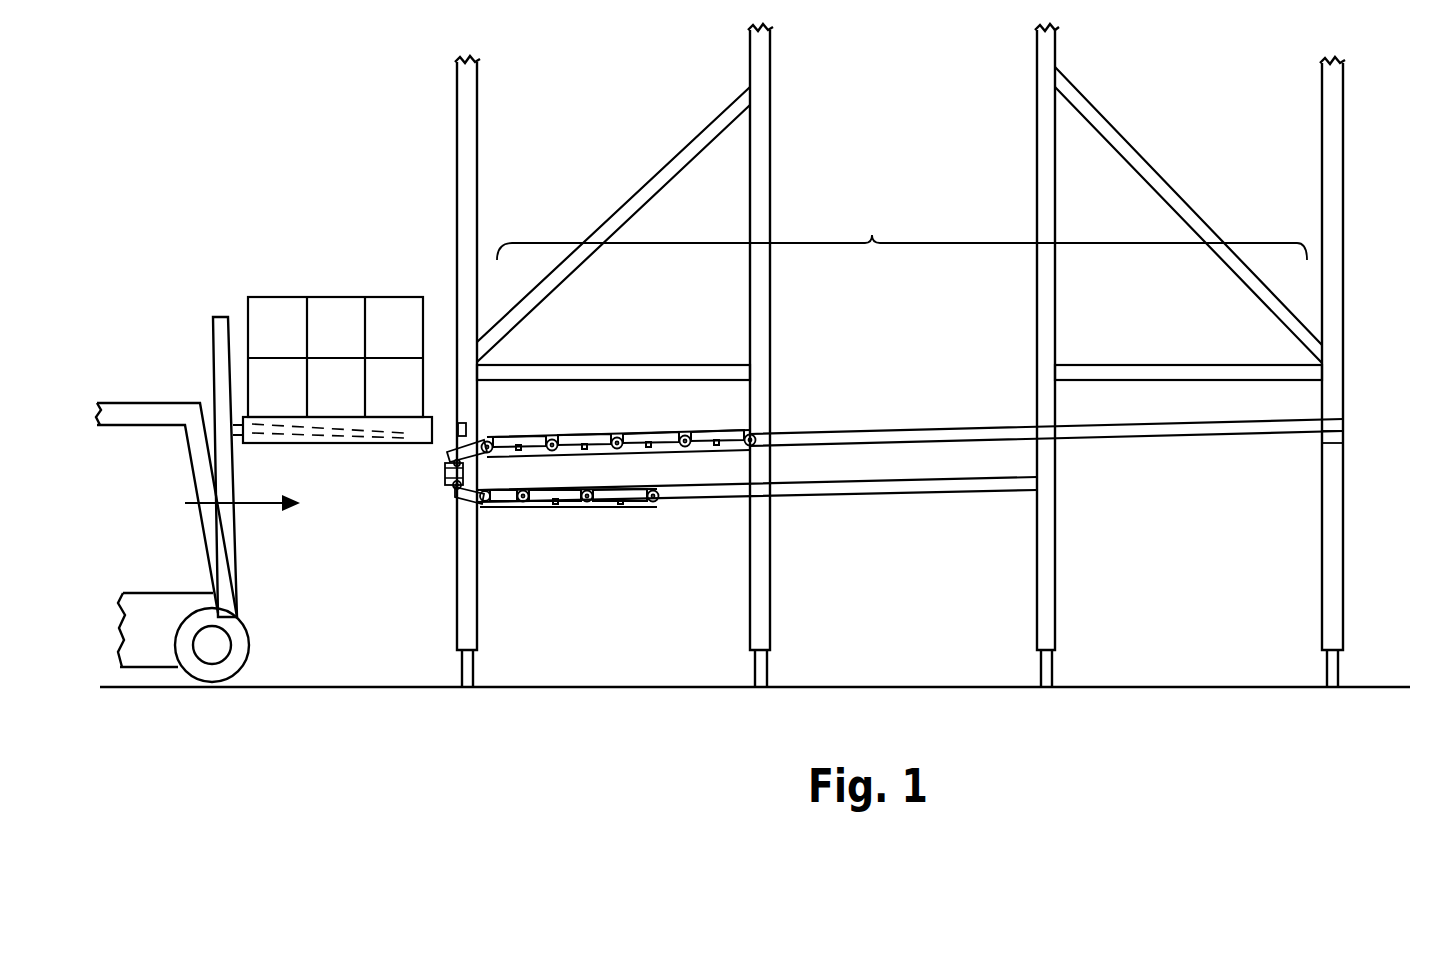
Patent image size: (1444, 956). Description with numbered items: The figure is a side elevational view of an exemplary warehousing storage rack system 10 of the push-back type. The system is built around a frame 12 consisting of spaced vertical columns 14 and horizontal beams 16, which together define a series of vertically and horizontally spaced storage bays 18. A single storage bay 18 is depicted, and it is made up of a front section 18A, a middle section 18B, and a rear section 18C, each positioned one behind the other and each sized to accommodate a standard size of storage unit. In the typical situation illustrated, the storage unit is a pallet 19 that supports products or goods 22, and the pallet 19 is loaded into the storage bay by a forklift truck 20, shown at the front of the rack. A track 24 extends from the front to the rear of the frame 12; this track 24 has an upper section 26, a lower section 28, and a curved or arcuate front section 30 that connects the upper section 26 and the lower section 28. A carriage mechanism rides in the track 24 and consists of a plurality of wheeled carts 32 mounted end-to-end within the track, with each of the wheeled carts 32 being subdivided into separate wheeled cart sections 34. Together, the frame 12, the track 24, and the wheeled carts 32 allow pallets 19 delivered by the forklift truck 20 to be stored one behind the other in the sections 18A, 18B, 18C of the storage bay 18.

The warehousing storage rack system 10 is at (390, 130).
The frame 12 is at (455, 203).
The vertical columns 14 is at (467, 105).
The horizontal beams 16 is at (717, 373).
The storage bay 18 is at (433, 262).
The front section 18A is at (650, 385).
The middle section 18B is at (898, 378).
The rear section 18C is at (1185, 353).
The pallet 19 is at (300, 452).
The forklift truck 20 is at (220, 565).
The products or goods 22 is at (287, 310).
The track 24 is at (1173, 436).
The upper section 26 is at (1207, 430).
The lower section 28 is at (695, 503).
The curved or arcuate front section 30 is at (455, 490).
The wheeled carts 32 is at (742, 418).
The wheeled cart sections 34 is at (525, 453).